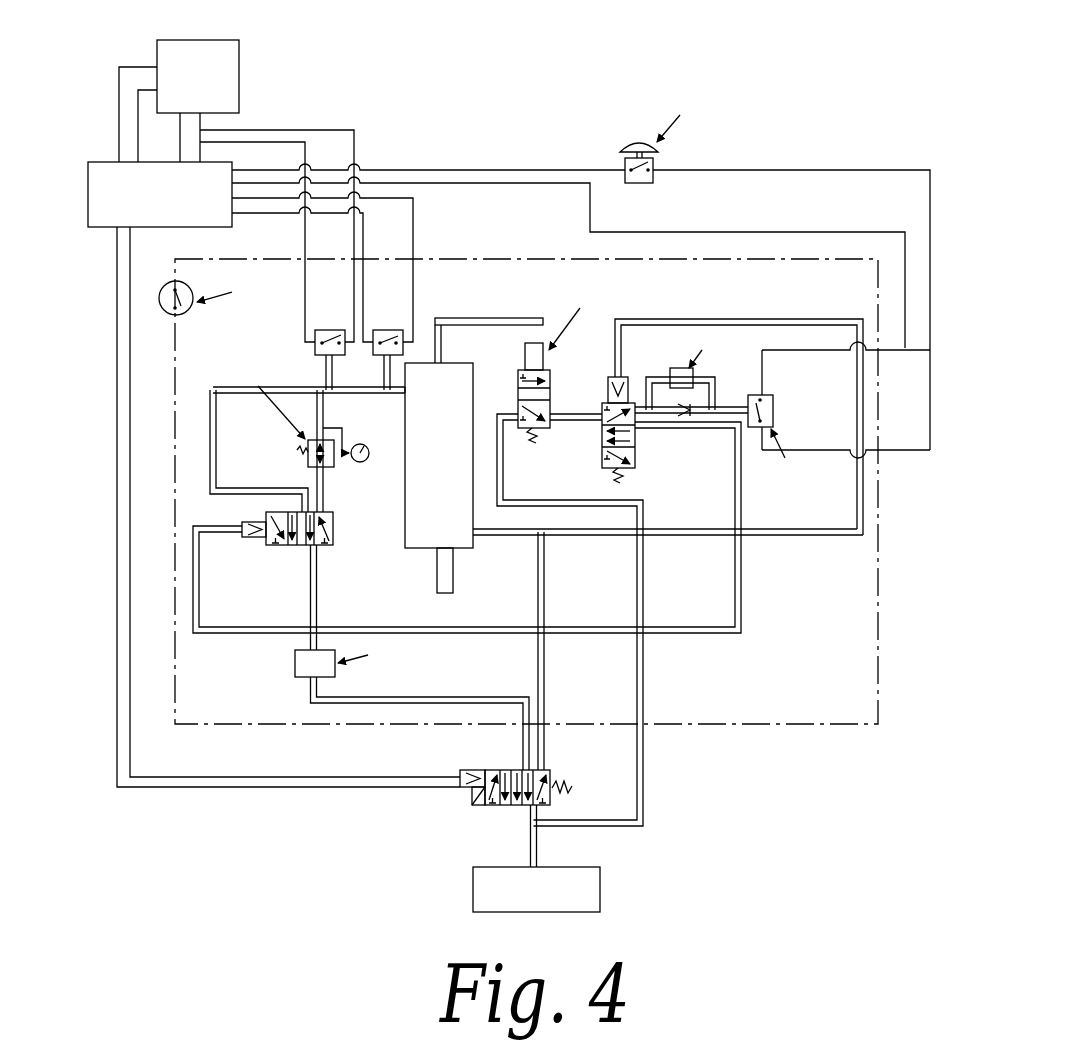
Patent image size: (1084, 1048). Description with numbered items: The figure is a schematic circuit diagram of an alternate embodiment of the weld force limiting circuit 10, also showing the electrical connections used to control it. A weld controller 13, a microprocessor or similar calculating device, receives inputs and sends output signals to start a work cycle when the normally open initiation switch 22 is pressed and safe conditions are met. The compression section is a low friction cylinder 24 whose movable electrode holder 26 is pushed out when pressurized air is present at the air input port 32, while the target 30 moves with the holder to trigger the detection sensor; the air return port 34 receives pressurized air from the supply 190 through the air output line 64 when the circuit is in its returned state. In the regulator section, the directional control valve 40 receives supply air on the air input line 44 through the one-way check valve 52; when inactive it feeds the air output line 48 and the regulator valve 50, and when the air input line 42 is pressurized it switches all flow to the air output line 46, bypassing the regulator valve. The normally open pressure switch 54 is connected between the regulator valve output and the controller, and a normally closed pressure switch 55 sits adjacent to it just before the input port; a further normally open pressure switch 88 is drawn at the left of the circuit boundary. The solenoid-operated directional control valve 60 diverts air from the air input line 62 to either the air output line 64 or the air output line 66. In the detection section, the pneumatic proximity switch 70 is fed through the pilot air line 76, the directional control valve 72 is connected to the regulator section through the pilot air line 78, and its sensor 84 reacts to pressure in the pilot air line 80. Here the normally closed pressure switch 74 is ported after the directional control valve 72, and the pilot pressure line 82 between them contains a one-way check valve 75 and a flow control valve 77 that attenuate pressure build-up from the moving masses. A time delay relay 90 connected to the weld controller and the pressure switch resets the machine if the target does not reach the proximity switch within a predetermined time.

The weld force limiting circuit 10 is at (322, 818).
The weld controller 13 is at (209, 220).
The normally open initiation switch 22 is at (775, 279).
The low friction cylinder 24 is at (458, 543).
The movable electrode holder 26 is at (455, 588).
The target 30 is at (455, 318).
The air input port 32 is at (412, 392).
The air return port 34 is at (470, 535).
The directional control valve 40 is at (334, 520).
The air input line 42 is at (198, 572).
The air input line 44 is at (310, 598).
The air output line 46 is at (257, 462).
The air output line 48 is at (325, 495).
The regulator valve 50 is at (306, 445).
The one-way check valve 52 is at (295, 670).
The normally open pressure switch 54 is at (390, 330).
The normally closed pressure switch 55 is at (330, 330).
The directional control valve 60 is at (550, 795).
The air input line 62 is at (530, 853).
The air output line 64 is at (545, 757).
The air output line 66 is at (523, 750).
The pneumatic proximity switch 70 is at (548, 425).
The directional control valve 72 is at (640, 465).
The normally closed pressure switch 74 is at (773, 400).
The one-way check valve 75 is at (670, 373).
The pilot air line 76 is at (510, 503).
The flow control valve 77 is at (688, 418).
The pilot air line 78 is at (735, 507).
The pilot air line 80 is at (858, 393).
The pilot pressure line 82 is at (730, 410).
The sensor 84 is at (612, 386).
The N/O pressure switch 88 is at (190, 290).
The time delay relay 90 is at (228, 53).
The supply 190 is at (600, 897).